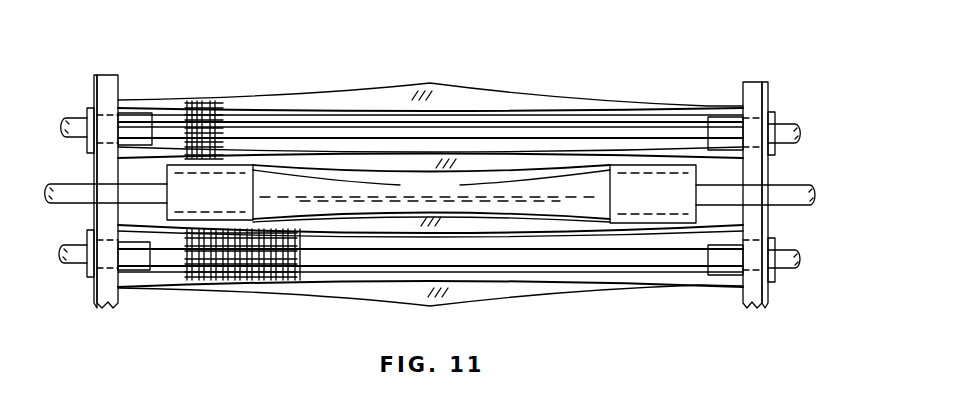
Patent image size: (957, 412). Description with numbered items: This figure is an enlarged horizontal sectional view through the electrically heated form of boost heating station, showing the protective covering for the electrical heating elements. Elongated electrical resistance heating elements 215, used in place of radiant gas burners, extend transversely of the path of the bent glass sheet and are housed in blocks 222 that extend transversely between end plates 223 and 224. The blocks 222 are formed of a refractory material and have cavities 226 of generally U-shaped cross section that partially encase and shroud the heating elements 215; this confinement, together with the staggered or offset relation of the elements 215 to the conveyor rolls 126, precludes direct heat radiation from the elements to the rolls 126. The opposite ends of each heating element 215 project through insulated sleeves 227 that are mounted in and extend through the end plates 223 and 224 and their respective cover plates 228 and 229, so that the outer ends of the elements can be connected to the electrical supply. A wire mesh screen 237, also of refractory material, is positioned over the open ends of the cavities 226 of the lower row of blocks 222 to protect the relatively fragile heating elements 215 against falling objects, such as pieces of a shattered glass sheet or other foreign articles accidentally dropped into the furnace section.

The conveyor roll 126 is at (628, 232).
The electrical resistance heating element 215 is at (530, 132).
The block 222 is at (267, 100).
The end plate 223 is at (753, 90).
The end plate 224 is at (108, 82).
The cavity 226 is at (320, 112).
The insulated sleeve 227 is at (135, 122).
The cover plate 228 is at (768, 105).
The cover plate 229 is at (94, 92).
The wire mesh screen 237 is at (207, 103).